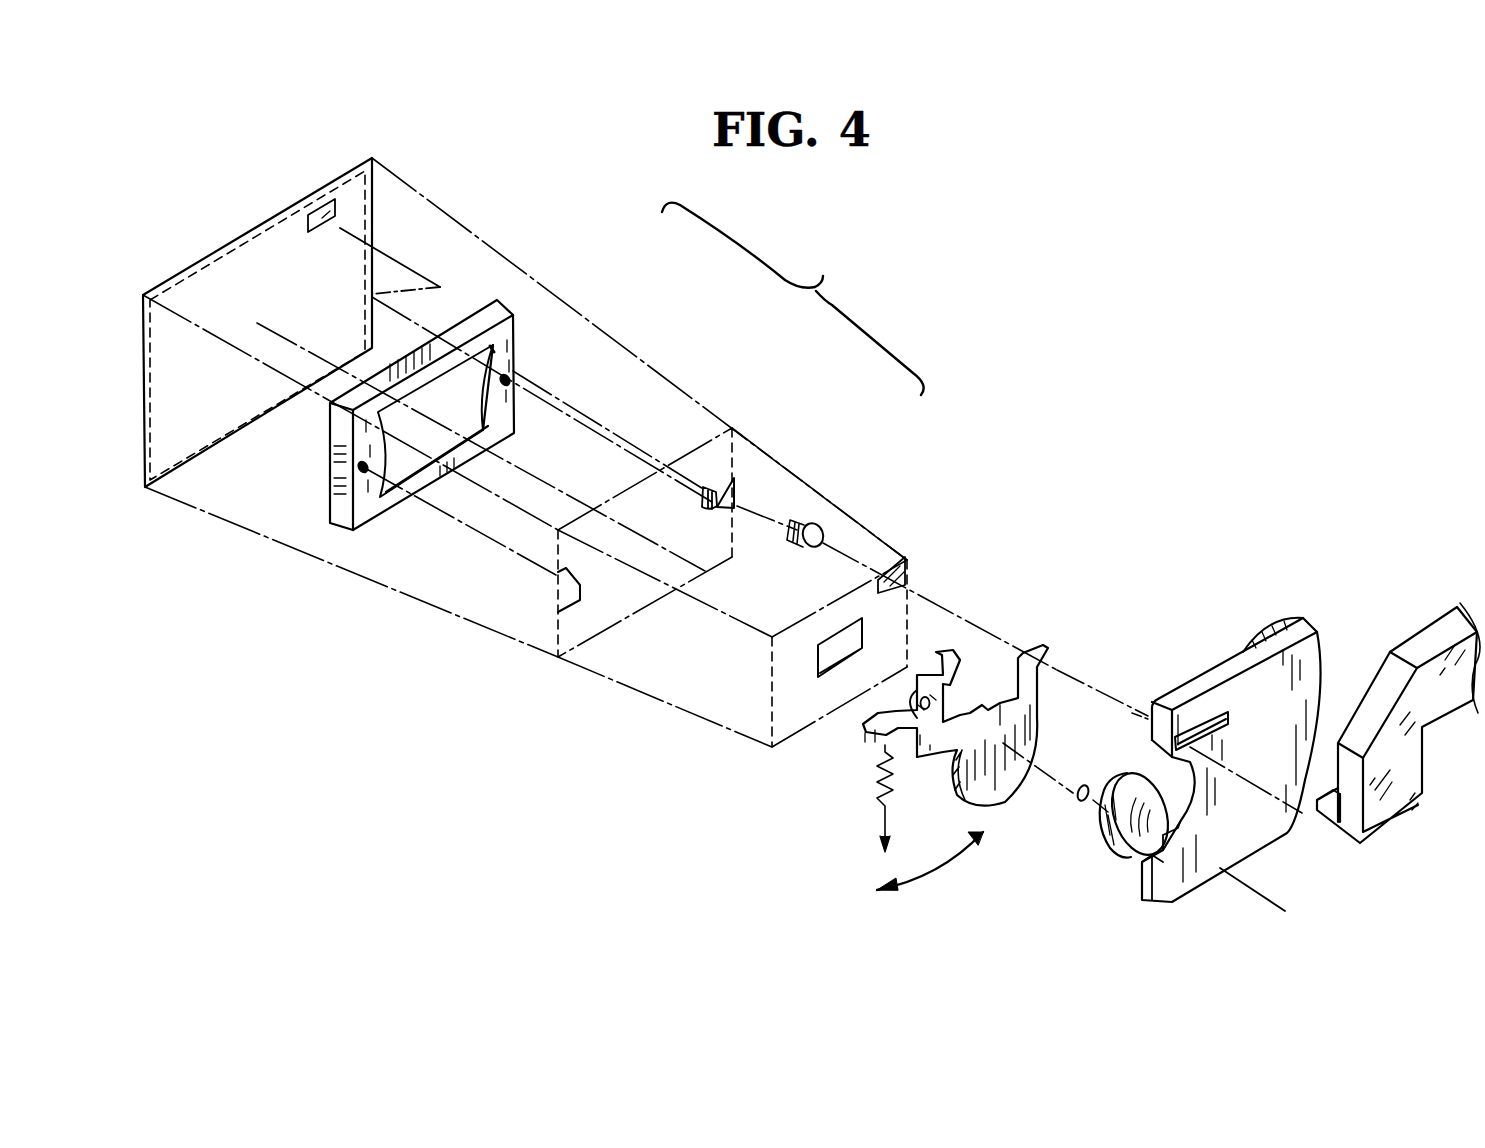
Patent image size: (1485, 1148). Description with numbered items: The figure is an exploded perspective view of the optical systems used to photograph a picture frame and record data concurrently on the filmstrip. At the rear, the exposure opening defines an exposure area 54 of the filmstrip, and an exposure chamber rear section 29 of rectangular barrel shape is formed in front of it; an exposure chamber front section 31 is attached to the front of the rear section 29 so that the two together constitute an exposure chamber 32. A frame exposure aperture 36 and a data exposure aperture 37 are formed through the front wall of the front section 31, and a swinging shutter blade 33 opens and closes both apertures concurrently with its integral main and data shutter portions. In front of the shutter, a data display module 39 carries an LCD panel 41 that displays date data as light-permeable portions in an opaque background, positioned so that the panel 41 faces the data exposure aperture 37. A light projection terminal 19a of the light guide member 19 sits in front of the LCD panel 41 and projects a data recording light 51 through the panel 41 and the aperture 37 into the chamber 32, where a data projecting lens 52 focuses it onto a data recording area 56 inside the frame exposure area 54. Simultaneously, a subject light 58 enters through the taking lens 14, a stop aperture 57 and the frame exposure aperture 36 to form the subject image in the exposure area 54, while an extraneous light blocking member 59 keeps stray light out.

The taking lens 14 is at (1120, 862).
The light guide member 19 is at (1423, 645).
The light projection terminal 19a is at (1308, 812).
The exposure chamber rear section 29 is at (555, 296).
The exposure chamber front section 31 is at (798, 478).
The exposure chamber 32 is at (793, 299).
The shutter blade 33 is at (994, 798).
The frame exposure aperture 36 is at (817, 670).
The data exposure aperture 37 is at (906, 561).
The data display module 39 is at (1212, 652).
The LCD panel 41 is at (1195, 725).
The data recording light 51 is at (390, 256).
The data projecting lens 52 is at (820, 528).
The exposure area 54 is at (240, 243).
The data recording area 56 is at (327, 192).
The stop aperture 57 is at (1085, 786).
The subject light 58 is at (1232, 880).
The extraneous light blocking member 59 is at (320, 468).